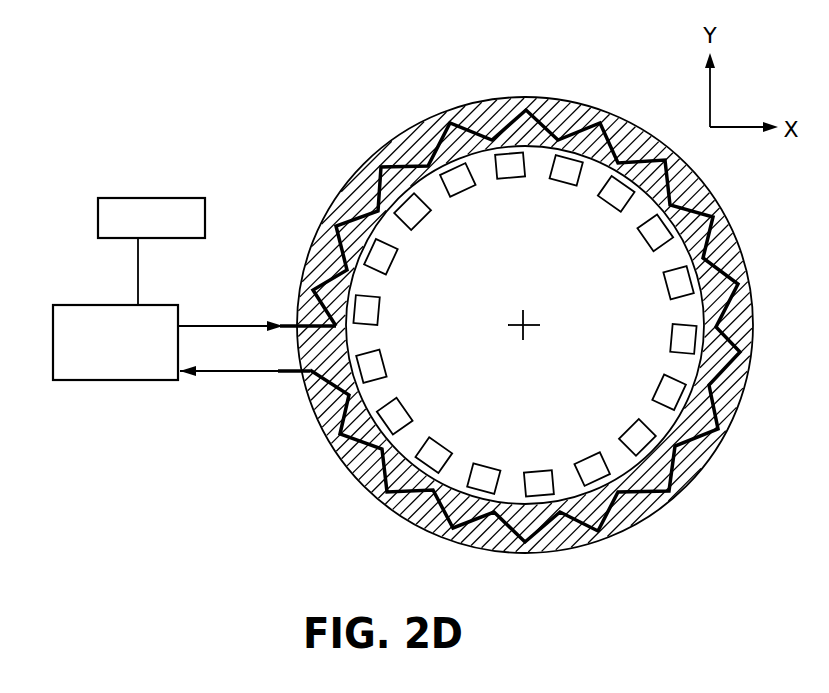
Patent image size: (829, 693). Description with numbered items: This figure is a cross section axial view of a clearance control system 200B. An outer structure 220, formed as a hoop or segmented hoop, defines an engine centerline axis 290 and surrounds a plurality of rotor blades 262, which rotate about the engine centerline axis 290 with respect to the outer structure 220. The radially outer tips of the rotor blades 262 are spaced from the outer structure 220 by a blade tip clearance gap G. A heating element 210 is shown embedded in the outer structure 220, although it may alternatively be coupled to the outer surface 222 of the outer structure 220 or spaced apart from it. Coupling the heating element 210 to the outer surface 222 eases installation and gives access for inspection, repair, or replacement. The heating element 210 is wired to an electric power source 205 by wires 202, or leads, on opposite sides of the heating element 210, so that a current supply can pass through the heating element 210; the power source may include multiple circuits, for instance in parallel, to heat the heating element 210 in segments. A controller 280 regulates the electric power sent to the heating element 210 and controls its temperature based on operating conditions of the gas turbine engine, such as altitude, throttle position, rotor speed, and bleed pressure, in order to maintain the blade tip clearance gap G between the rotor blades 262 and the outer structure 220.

The clearance control system 200B is at (183, 71).
The heating element 210 is at (437, 143).
The outer structure 220 is at (350, 188).
The outer surface 222 is at (330, 442).
The rotor blades 262 is at (668, 384).
The clearance gap G is at (688, 369).
The engine centerline axis 290 is at (522, 328).
The electric power source 205 is at (67, 307).
The controller 280 is at (130, 198).
The wires 202 is at (237, 327).